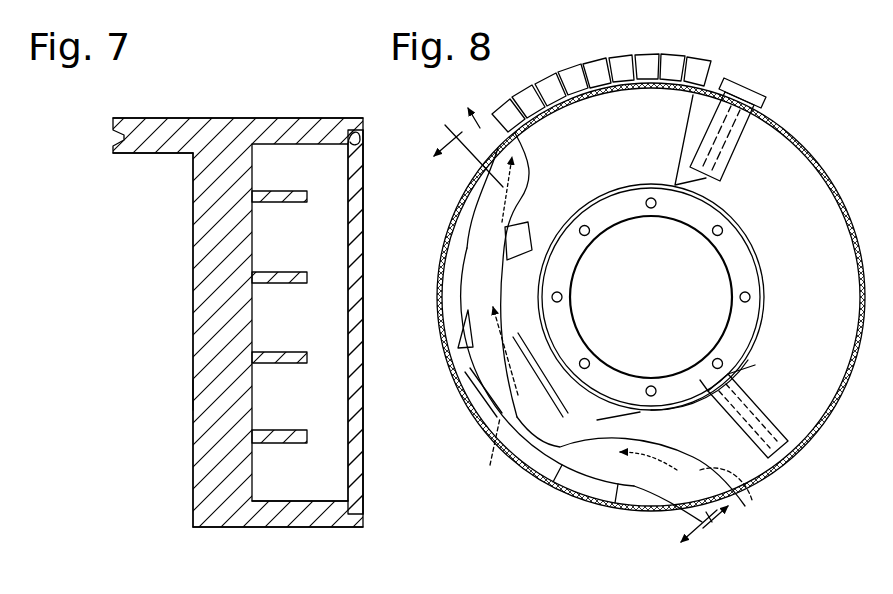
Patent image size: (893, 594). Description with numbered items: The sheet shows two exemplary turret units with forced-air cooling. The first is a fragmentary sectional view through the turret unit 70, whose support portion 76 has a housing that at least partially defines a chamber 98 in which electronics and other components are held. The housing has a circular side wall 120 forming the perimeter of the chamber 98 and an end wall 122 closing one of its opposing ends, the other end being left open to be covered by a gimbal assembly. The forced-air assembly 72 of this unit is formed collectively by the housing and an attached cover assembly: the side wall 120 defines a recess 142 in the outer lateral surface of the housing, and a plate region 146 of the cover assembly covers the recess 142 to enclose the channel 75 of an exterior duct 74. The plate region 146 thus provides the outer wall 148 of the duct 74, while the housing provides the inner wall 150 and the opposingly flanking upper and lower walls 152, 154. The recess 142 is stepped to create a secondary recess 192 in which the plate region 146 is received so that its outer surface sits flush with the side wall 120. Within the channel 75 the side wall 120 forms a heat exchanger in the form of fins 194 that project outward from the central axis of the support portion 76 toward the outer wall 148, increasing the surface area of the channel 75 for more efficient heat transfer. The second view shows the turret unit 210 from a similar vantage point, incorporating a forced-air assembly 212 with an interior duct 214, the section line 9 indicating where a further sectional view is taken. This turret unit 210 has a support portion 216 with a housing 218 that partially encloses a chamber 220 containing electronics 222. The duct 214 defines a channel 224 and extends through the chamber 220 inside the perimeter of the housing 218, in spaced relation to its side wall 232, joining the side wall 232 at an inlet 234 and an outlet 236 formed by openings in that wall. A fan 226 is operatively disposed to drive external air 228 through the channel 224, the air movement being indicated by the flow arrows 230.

In FIG. 7, the turret unit 70 is at (58, 103).
In FIG. 7, the support portion 76 is at (58, 149).
In FIG. 7, the forced-air assembly 72 is at (384, 480).
In FIG. 7, the exterior duct 74 is at (368, 516).
In FIG. 7, the channel 75 is at (306, 496).
In FIG. 7, the chamber 98 is at (193, 445).
In FIG. 7, the side wall 120 is at (193, 275).
In FIG. 7, the end wall 122 is at (160, 153).
In FIG. 7, the recess 142 is at (262, 314).
In FIG. 7, the plate region 146 is at (363, 165).
In FIG. 7, the outer wall 148 is at (363, 355).
In FIG. 7, the inner wall 150 is at (193, 393).
In FIG. 7, the upper wall 152 is at (262, 118).
In FIG. 7, the lower wall 154 is at (293, 520).
In FIG. 7, the secondary recess 192 is at (352, 140).
In FIG. 7, the fins 194 is at (285, 272).
In FIG. 8, the section line 9- 9 is at (574, 336).
In FIG. 8, the turret unit 210 is at (796, 76).
In FIG. 8, the forced-air assembly 212 is at (678, 428).
In FIG. 8, the interior duct 214 is at (598, 421).
In FIG. 8, the support portion 216 is at (796, 112).
In FIG. 8, the housing 218 is at (830, 169).
In FIG. 8, the chamber 220 is at (826, 396).
In FIG. 8, the electronics 222 is at (686, 184).
In FIG. 8, the channel 224 is at (503, 256).
In FIG. 8, the fan 226 is at (744, 487).
In FIG. 8, the external air 228 is at (758, 530).
In FIG. 8, the flow arrows 230 is at (495, 462).
In FIG. 8, the side wall 232 is at (542, 476).
In FIG. 8, the inlet 234 is at (700, 516).
In FIG. 8, the outlet 236 is at (500, 150).